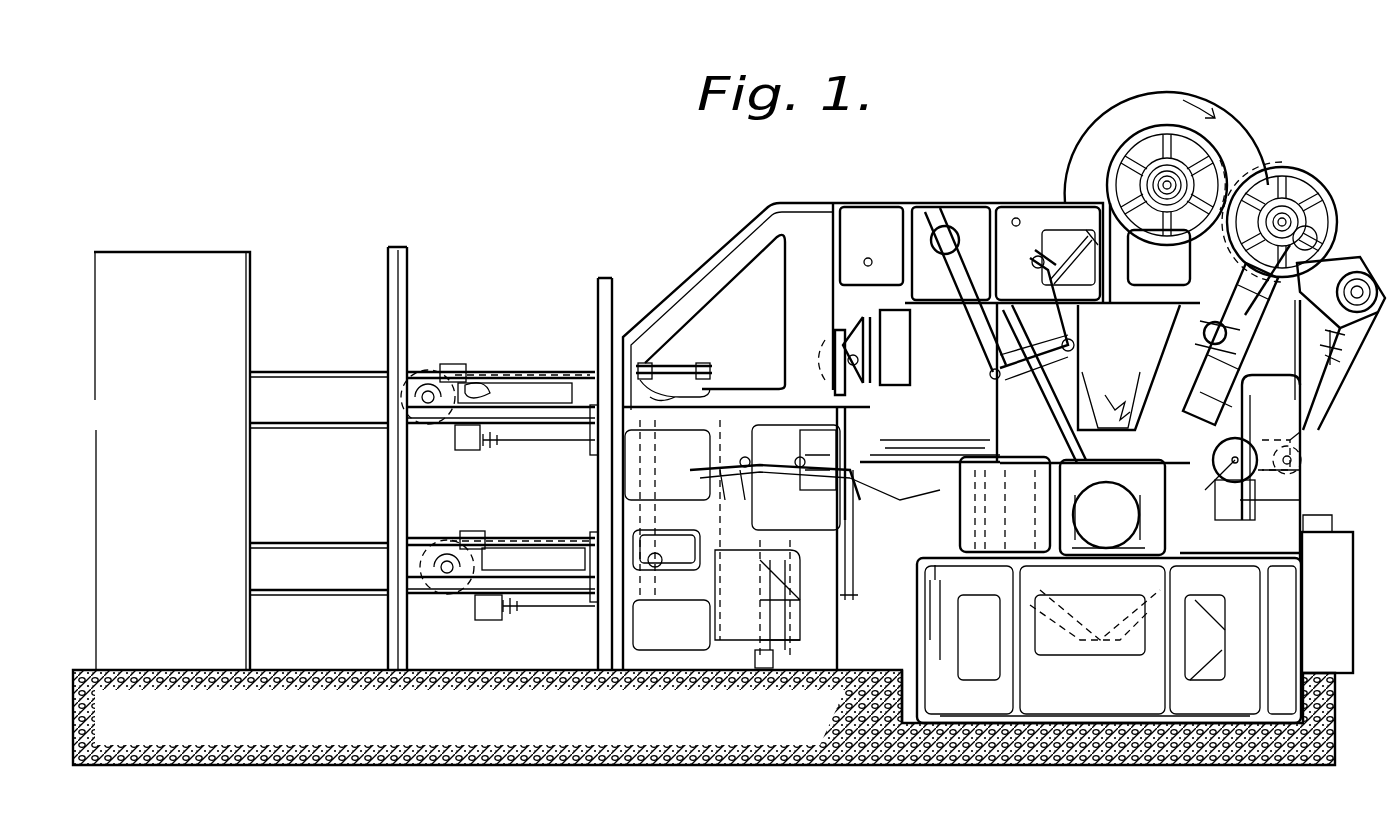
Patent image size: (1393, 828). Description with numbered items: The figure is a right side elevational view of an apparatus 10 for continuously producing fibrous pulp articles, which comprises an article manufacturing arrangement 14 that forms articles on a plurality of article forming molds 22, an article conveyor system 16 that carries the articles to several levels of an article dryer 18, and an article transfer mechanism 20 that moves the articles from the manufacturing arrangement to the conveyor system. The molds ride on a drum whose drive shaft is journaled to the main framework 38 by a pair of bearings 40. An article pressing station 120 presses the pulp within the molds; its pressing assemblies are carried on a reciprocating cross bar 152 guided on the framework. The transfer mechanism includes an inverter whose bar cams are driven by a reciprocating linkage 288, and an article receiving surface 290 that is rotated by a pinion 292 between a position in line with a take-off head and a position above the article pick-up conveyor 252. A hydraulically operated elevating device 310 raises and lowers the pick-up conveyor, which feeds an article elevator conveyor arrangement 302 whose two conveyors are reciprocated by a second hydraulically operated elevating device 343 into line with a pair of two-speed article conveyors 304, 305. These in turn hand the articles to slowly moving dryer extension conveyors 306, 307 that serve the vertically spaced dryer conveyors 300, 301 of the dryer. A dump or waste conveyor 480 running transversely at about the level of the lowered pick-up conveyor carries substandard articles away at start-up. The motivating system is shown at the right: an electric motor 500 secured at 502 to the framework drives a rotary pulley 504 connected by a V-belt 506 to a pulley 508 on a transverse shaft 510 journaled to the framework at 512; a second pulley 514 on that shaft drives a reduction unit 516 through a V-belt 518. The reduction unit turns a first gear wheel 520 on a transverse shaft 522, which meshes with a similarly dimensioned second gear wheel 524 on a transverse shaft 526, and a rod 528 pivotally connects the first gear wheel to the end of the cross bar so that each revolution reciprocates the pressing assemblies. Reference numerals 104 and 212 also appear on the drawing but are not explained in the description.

The apparatus 10 is at (709, 226).
The article manufacturing arrangement 14 is at (1097, 386).
The article conveyor system 16 is at (499, 465).
The article dryer 18 is at (190, 325).
The article transfer mechanism 20 is at (974, 398).
The article forming molds 22 is at (1121, 393).
The main framework 38 is at (1280, 542).
The bearings 40 is at (1090, 510).
The panel 104 is at (992, 647).
The article pressing station 120 is at (1238, 350).
The reciprocating cross bar 152 is at (1205, 340).
The drive wheel 212 is at (1210, 103).
The article pick-up conveyor 252 is at (944, 459).
The reciprocating linkage 288 is at (1037, 320).
The article receiving surface 290 is at (905, 360).
The pinion 292 is at (830, 360).
The dryer conveyor 300 is at (338, 372).
The dryer conveyor 301 is at (350, 543).
The article elevator conveyor arrangement 302 is at (790, 456).
The two-speed article conveyor 304 is at (690, 364).
The two-speed article conveyor 305 is at (668, 536).
The dryer extension conveyor 306 is at (506, 359).
The dryer extension conveyor 307 is at (556, 528).
The hydraulically operated elevating device 310 is at (850, 570).
The hydraulically operated elevating device 343 is at (775, 640).
The dump or waste conveyor 480 is at (706, 477).
The electric motor 500 is at (1256, 447).
The motor securement 502 is at (1243, 502).
The rotary pulley 504 is at (1232, 462).
The V-belt 506 is at (1281, 439).
The pulley 508 is at (1302, 472).
The transverse shaft 510 is at (1300, 455).
The shaft journal 512 is at (1300, 460).
The second pulley 514 is at (1303, 440).
The reduction unit 516 is at (1342, 268).
The V-belt 518 is at (1338, 368).
The first gear wheel 520 is at (1330, 220).
The transverse shaft 522 is at (1292, 230).
The second gear wheel 524 is at (1205, 165).
The transverse shaft 526 is at (1158, 180).
The rod 528 is at (1225, 305).